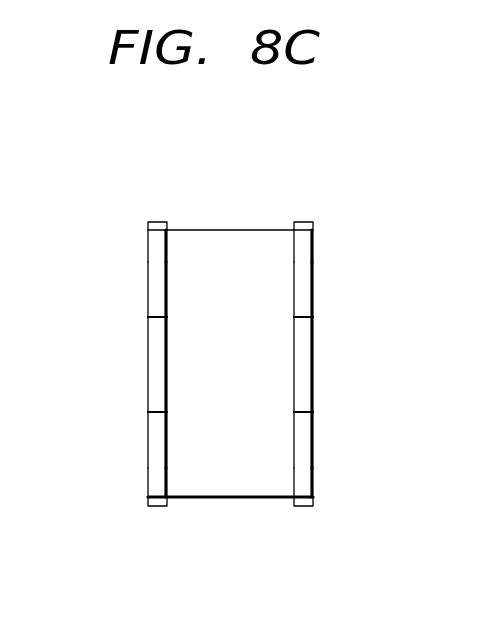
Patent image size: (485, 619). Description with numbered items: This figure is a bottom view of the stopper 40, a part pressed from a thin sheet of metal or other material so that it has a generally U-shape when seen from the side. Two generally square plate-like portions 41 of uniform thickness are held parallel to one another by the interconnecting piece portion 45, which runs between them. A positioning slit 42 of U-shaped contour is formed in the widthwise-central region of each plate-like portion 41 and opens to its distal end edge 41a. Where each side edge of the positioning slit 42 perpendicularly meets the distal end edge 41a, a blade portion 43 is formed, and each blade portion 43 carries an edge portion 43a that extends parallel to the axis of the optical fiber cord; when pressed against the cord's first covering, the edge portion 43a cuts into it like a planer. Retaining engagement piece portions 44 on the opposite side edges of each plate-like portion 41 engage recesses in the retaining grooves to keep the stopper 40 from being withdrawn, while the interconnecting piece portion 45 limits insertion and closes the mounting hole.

The stopper 40 is at (227, 205).
The plate-like portion 41 is at (148, 449).
The distal end edge 41a is at (152, 270).
The positioning slit 42 is at (155, 365).
The blade portion 43 is at (147, 318).
The edge portion 43a is at (167, 383).
The retaining engagement piece portion 44 is at (153, 222).
The interconnecting piece portion 45 is at (228, 494).